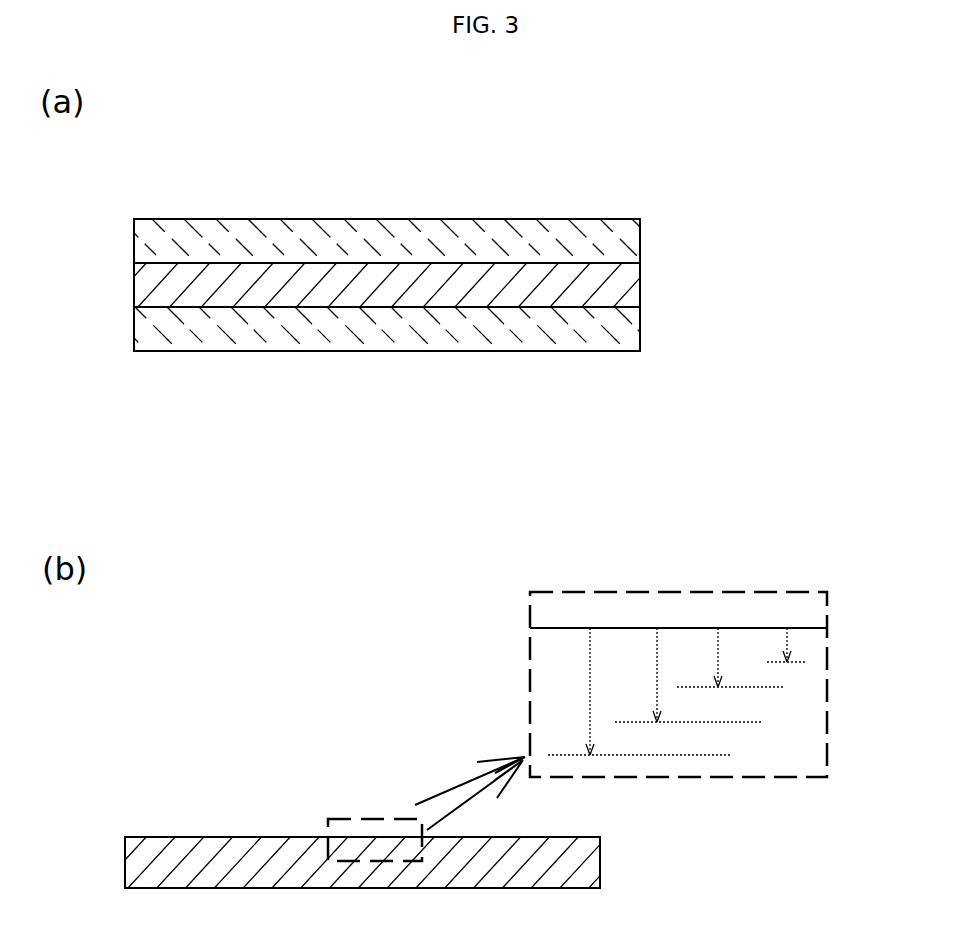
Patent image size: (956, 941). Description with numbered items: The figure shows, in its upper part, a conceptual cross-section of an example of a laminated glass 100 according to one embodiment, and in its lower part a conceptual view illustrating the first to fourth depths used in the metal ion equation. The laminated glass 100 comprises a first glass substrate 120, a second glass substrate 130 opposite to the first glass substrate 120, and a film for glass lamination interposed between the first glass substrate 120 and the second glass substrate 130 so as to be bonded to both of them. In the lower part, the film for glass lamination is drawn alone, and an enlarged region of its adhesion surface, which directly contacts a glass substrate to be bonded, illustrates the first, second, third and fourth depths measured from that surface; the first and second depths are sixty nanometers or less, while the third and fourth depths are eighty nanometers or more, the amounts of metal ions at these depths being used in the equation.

The laminated glass 100 is at (218, 142).
The first glass substrate 120 is at (518, 232).
The second glass substrate 130 is at (515, 347).